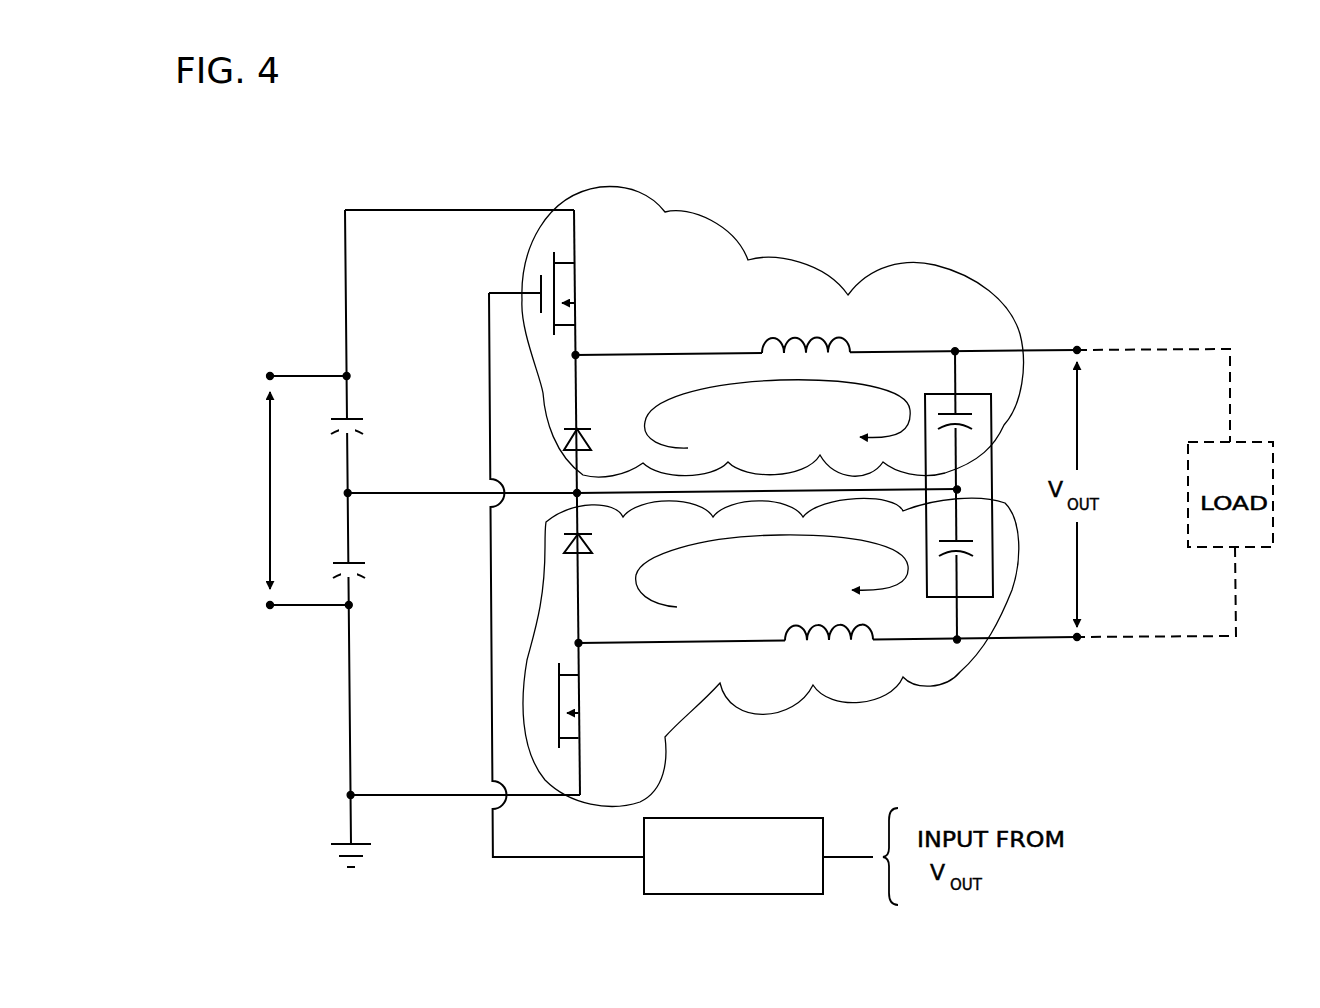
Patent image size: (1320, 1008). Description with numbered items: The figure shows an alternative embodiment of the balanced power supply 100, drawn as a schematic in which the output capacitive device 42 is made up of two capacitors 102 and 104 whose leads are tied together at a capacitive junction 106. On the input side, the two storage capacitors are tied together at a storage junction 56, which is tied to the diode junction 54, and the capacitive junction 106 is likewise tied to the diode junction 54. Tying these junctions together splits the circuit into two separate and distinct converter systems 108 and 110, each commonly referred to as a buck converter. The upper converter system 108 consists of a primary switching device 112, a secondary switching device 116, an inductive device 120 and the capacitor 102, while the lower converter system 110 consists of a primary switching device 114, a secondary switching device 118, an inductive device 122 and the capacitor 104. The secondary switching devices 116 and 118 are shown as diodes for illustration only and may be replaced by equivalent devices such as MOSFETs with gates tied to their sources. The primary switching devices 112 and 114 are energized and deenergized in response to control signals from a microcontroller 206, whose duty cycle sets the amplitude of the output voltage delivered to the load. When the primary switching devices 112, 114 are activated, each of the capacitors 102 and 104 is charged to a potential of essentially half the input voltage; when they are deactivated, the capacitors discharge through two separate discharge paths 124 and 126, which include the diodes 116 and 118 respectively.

The balanced power supply 100 is at (283, 168).
The storage junction 56 is at (351, 490).
The diode junction 54 is at (575, 493).
The primary switching device 112 is at (565, 286).
The primary switching device 114 is at (566, 697).
The secondary switching device 116 is at (580, 423).
The secondary switching device 118 is at (592, 546).
The inductive device 120 is at (851, 337).
The inductive device 122 is at (818, 644).
The discharge path 124 is at (786, 423).
The discharge path 126 is at (790, 584).
The converter system 108 is at (778, 258).
The converter system 110 is at (870, 712).
The capacitive device 42 is at (973, 397).
The capacitor 102 is at (965, 428).
The capacitor 104 is at (965, 557).
The capacitive junction 106 is at (978, 494).
The microcontroller 206 is at (757, 827).